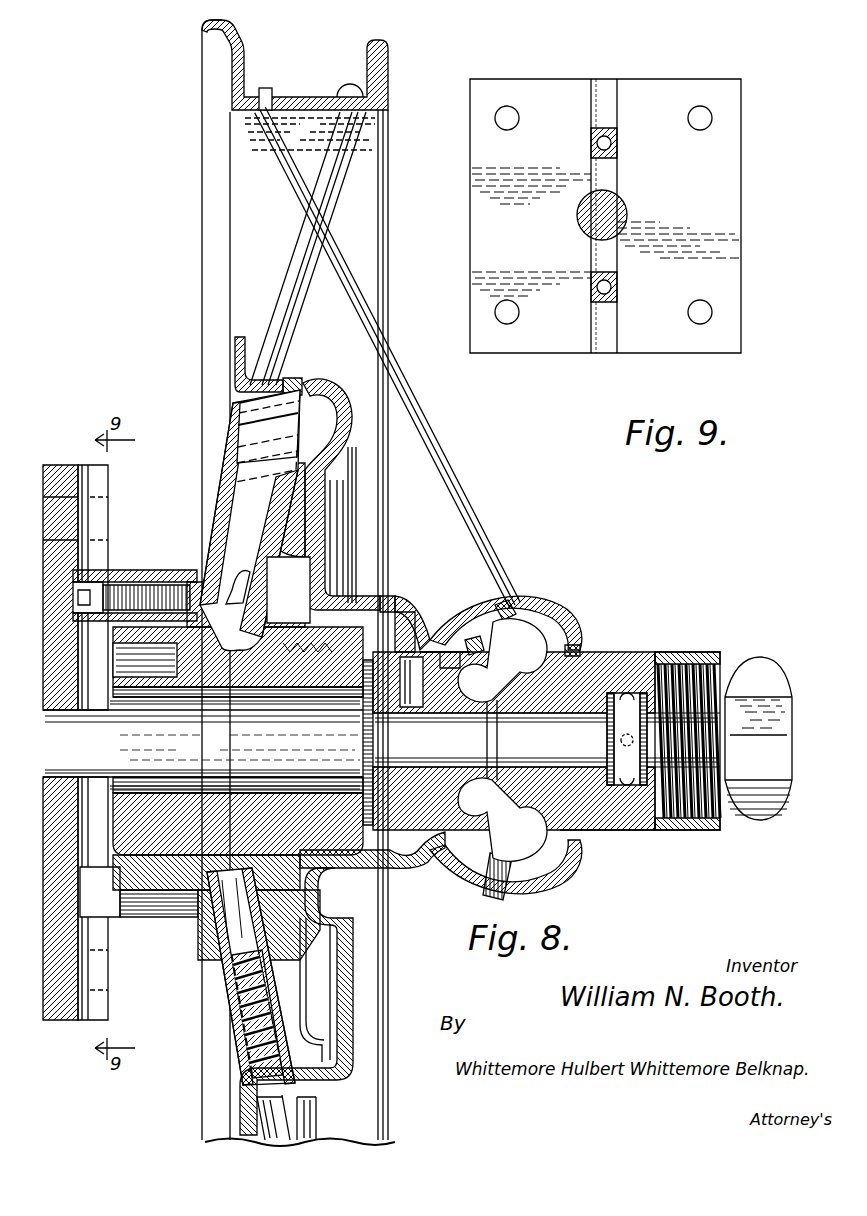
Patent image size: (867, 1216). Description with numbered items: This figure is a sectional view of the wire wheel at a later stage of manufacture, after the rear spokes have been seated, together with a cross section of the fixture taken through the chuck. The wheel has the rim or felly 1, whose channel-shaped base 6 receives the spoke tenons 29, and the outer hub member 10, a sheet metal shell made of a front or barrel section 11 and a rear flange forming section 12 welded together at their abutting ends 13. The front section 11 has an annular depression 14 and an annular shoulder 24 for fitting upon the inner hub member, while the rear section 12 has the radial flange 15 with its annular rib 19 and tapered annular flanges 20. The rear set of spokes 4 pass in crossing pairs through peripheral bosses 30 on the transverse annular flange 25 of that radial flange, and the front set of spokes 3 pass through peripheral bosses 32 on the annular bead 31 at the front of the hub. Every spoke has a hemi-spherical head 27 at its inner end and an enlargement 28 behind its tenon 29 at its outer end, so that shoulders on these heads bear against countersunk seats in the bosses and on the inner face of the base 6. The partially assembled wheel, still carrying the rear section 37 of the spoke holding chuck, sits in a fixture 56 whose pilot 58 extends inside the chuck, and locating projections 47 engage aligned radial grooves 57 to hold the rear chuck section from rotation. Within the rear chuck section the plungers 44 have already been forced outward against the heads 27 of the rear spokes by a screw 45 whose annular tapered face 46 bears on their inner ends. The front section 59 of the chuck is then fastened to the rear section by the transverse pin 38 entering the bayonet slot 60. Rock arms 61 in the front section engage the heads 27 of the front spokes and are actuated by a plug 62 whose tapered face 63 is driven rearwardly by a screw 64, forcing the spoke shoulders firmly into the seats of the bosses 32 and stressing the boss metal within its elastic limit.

In FIG. 8, the rim 1 is at (246, 54).
In FIG. 8, the front set of spokes 3 is at (441, 426).
In FIG. 8, the rear set of spokes 4 is at (292, 276).
In FIG. 8, the base of the felly 6 is at (306, 100).
In FIG. 8, the outer hub member or shell 10 is at (556, 620).
In FIG. 8, the front or barrel section 11 is at (436, 650).
In FIG. 8, the rear or flange forming section 12 is at (346, 597).
In FIG. 8, the welded abutting ends 13 is at (398, 598).
In FIG. 8, the annular depression 14 is at (426, 848).
In FIG. 8, the radial flange 15 is at (328, 504).
In FIG. 8, the annular rib 19 is at (354, 480).
In FIG. 8, the tapered annular flanges 20 is at (352, 982).
In FIG. 8, the annular shoulder 24 is at (408, 640).
In FIG. 8, the transverse annular flange 25 is at (333, 410).
In FIG. 8, the hemi-spherical heads 27 is at (303, 390).
In FIG. 8, the enlargements 28 is at (242, 118).
In FIG. 8, the tenons 29 is at (272, 92).
In FIG. 8, the peripheral bosses 30 is at (263, 346).
In FIG. 8, the annular bead 31 is at (560, 614).
In FIG. 8, the peripheral bosses 32 is at (475, 636).
In FIG. 8, the rear section of the spoke holding chuck 37 is at (190, 570).
In FIG. 8, the transverse pin 38 is at (448, 652).
In FIG. 8, the plungers 44 is at (250, 737).
In FIG. 8, the screw 45 is at (202, 897).
In FIG. 8, the annular tapered face 46 is at (280, 626).
In FIG. 8, the locating projections 47 is at (112, 590).
In FIG. 9, the locating projections 47 is at (618, 143).
In FIG. 8, the fixture 56 is at (52, 466).
In FIG. 9, the fixture 56 is at (745, 183).
In FIG. 8, the radial grooves 57 is at (96, 522).
In FIG. 9, the radial grooves 57 is at (600, 353).
In FIG. 8, the pilot 58 is at (381, 741).
In FIG. 9, the pilot 58 is at (627, 222).
In FIG. 8, the front section of the spoke holding chuck 59 is at (600, 833).
In FIG. 8, the bayonet slot 60 is at (410, 708).
In FIG. 8, the rock arms 61 is at (502, 740).
In FIG. 8, the plug 62 is at (630, 660).
In FIG. 8, the tapered face 63 is at (586, 652).
In FIG. 8, the screw 64 is at (710, 652).